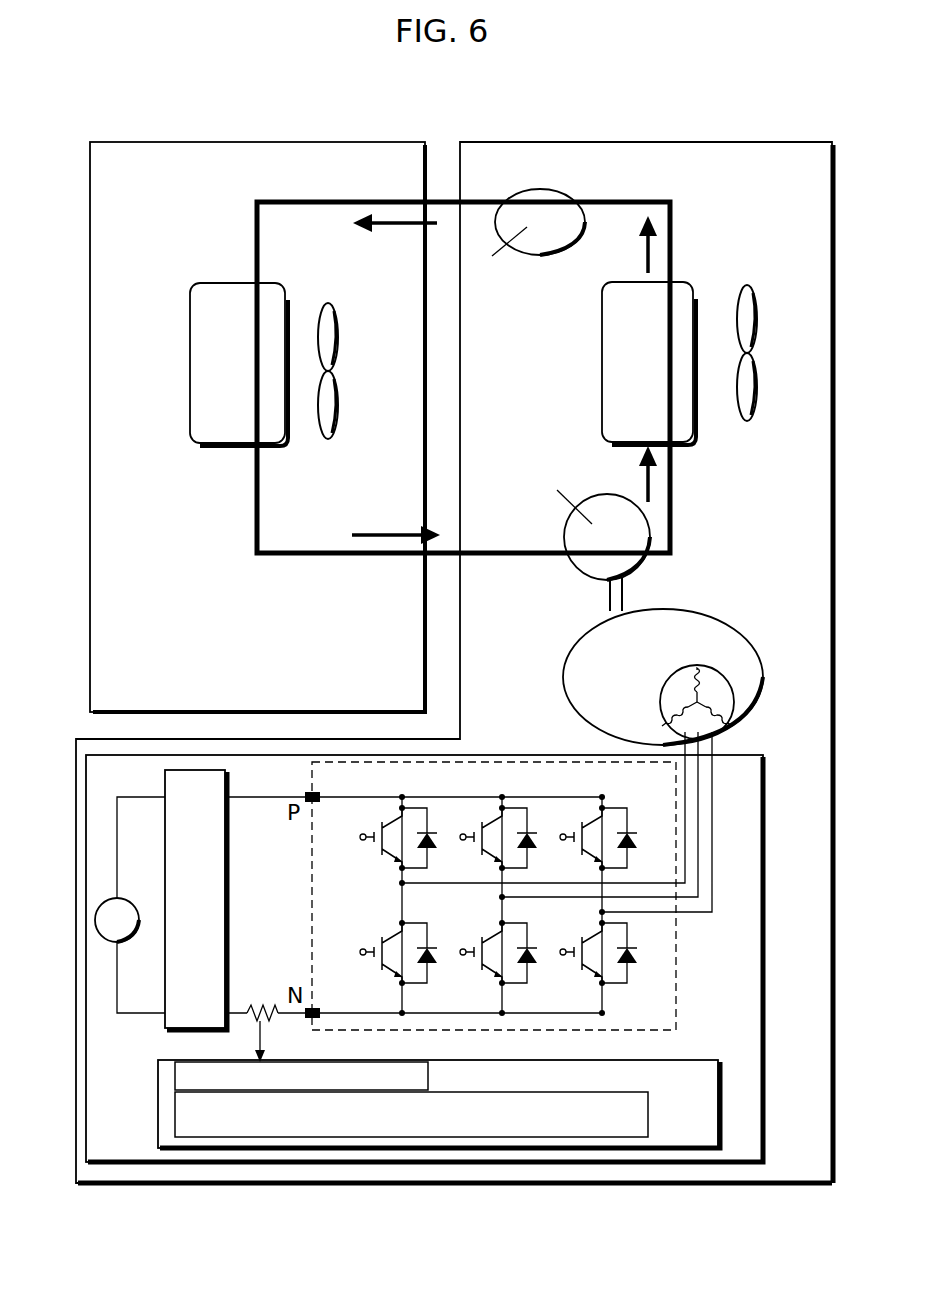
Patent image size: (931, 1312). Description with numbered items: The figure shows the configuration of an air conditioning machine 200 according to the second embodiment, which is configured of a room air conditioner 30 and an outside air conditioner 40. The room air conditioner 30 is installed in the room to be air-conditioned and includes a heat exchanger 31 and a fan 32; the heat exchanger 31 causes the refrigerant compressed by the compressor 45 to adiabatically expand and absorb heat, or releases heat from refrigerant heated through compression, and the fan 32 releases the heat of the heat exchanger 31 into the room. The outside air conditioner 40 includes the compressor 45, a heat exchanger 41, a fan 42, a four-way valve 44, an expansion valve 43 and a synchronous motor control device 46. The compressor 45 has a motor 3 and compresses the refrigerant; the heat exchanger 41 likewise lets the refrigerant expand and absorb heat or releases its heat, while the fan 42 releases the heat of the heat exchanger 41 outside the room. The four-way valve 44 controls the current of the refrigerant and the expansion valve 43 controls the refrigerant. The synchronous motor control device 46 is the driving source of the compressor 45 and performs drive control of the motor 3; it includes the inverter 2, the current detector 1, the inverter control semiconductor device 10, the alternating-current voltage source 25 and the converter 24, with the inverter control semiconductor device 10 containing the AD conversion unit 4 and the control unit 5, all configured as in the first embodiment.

The air conditioning machine 200 is at (795, 101).
The room air conditioner 30 is at (90, 146).
The outside air conditioner 40 is at (460, 148).
The heat exchanger 31 is at (190, 340).
The fan 32 is at (320, 306).
The heat exchanger 41 is at (602, 359).
The fan 42 is at (740, 289).
The expansion valve 43 is at (520, 196).
The four-way valve 44 is at (565, 546).
The compressor 45 is at (566, 670).
The motor 3 is at (735, 708).
The synchronous motor control device 46 is at (76, 813).
The converter 24 is at (225, 880).
The alternating-current voltage source 25 is at (125, 898).
The inverter 2 is at (312, 918).
The current detector 1 is at (262, 1008).
The inverter control semiconductor device 10 is at (680, 1060).
The AD conversion unit 4 is at (175, 1077).
The control unit 5 is at (175, 1117).